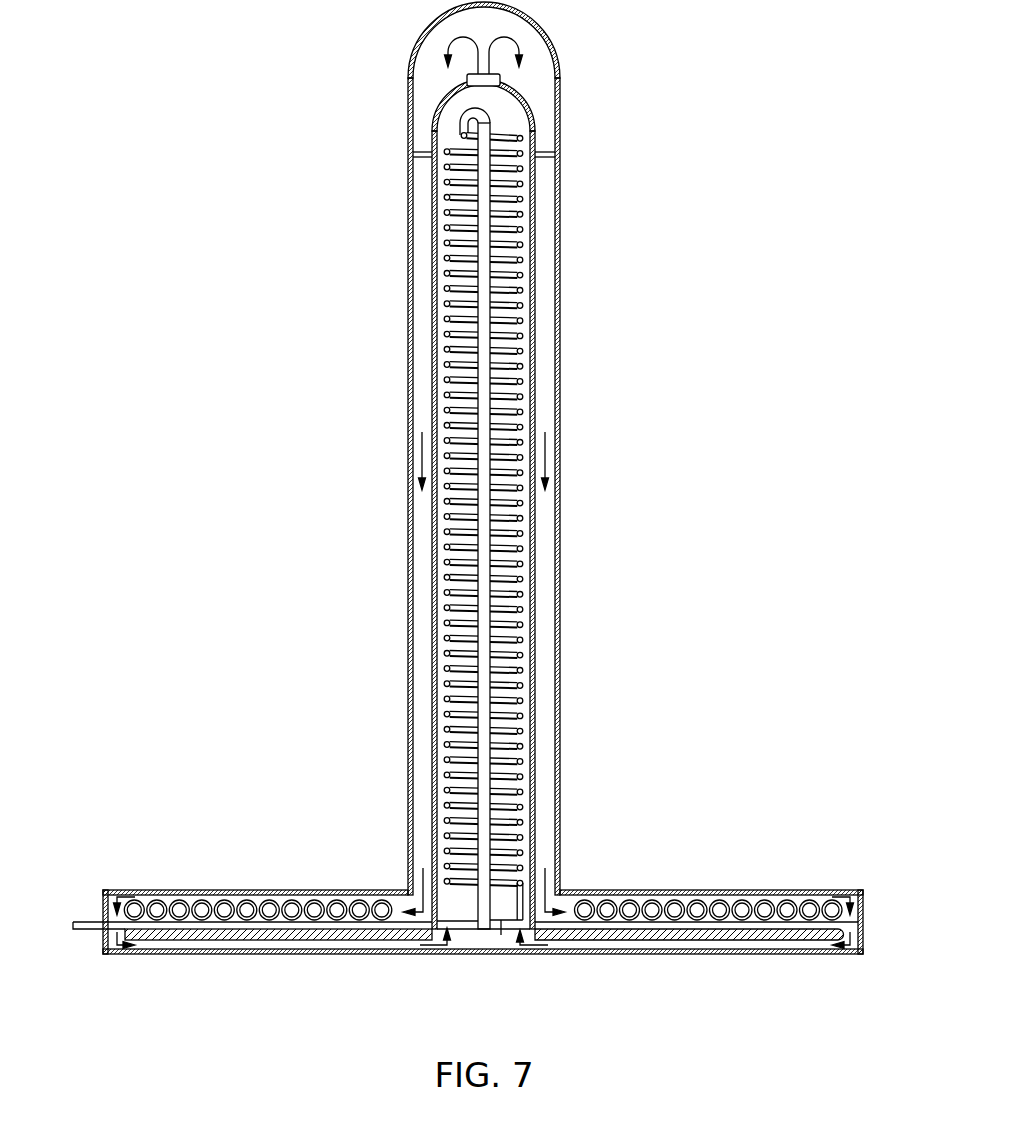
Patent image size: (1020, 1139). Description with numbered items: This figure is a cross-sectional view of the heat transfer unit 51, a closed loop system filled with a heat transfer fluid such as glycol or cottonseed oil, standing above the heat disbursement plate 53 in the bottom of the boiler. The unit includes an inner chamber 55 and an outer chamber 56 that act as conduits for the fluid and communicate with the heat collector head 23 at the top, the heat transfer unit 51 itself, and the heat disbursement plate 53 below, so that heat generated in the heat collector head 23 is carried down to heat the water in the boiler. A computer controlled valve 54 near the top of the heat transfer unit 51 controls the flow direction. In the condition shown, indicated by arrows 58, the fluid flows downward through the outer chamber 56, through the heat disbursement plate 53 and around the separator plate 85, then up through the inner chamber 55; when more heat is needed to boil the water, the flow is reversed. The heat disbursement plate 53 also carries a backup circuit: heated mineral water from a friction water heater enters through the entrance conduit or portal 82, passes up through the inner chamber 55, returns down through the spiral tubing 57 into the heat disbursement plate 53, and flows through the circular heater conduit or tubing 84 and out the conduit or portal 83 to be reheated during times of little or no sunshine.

The heat collector head 23 is at (408, 128).
The heat transfer unit 51 is at (558, 367).
The heat disbursement plate 53 is at (772, 890).
The computer controlled valve 54 is at (500, 78).
The inner chamber 55 is at (527, 288).
The outer chamber 56 is at (551, 541).
The spiral tubing 57 is at (524, 636).
The arrows 58 is at (443, 53).
The entrance conduit or portal 82 is at (78, 921).
The conduit or portal 83 is at (501, 935).
The circular heater conduit or tubing 84 is at (224, 900).
The separator plate 85 is at (265, 941).